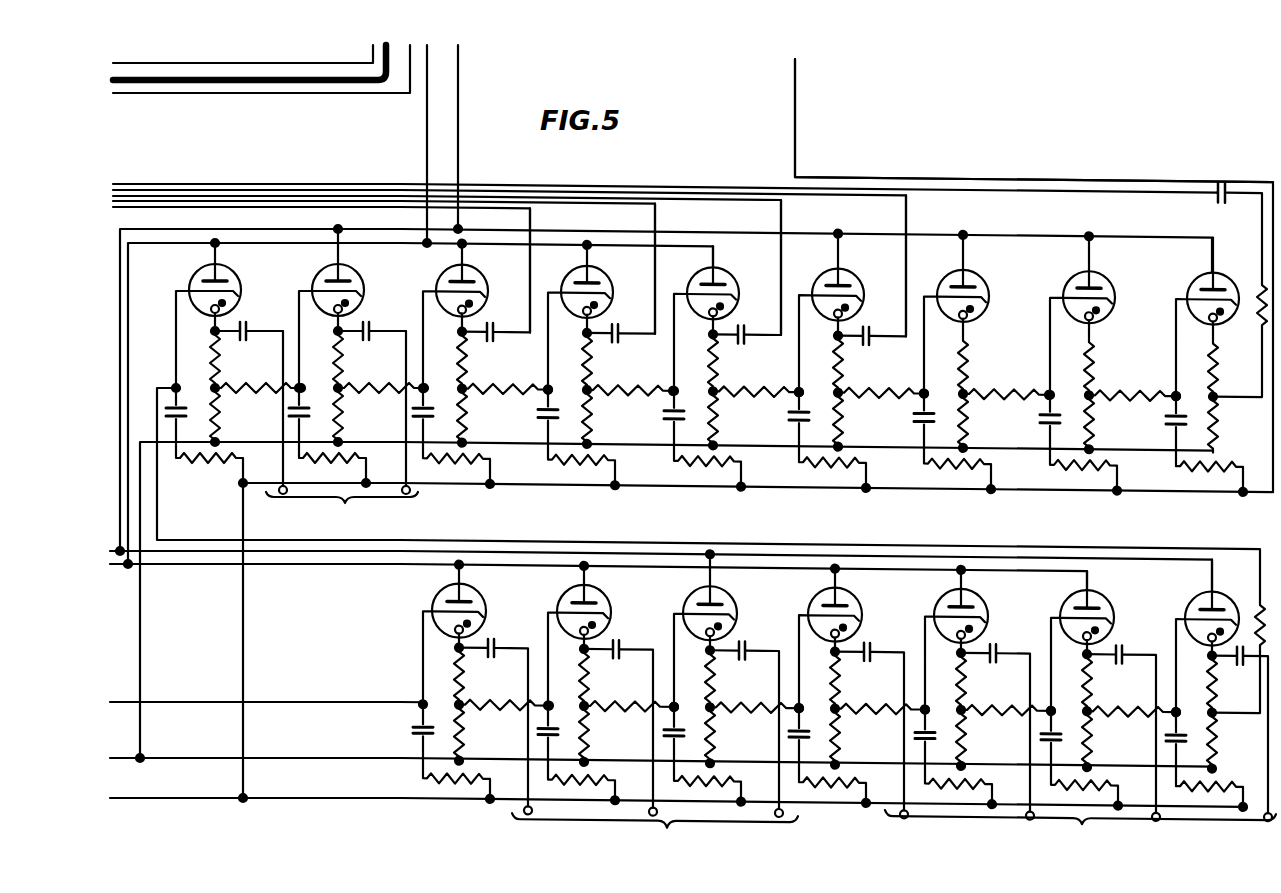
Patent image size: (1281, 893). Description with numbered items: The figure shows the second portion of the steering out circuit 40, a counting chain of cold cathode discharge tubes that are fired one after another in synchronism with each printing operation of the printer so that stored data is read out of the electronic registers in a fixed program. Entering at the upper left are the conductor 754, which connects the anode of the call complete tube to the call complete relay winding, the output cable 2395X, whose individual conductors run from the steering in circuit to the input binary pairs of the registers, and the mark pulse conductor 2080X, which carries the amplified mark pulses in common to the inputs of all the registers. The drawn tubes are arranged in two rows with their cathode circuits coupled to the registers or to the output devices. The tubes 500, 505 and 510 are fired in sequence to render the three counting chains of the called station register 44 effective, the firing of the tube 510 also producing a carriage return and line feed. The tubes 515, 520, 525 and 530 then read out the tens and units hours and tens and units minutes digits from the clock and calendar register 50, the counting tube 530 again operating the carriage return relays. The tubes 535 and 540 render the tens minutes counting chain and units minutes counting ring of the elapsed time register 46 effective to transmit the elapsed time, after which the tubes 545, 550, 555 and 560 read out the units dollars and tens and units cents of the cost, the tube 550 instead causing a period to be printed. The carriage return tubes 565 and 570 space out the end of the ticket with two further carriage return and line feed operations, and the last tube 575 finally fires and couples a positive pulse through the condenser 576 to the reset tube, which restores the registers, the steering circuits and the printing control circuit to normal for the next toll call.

The steering out circuit 40 is at (1240, 104).
The called station register 44 is at (655, 829).
The elapsed time register 46 is at (342, 513).
The clock and calendar register 50 is at (1080, 826).
The cold cathode discharge tube 500 is at (483, 687).
The cold cathode discharge tube 505 is at (608, 688).
The cold cathode discharge tube 510 is at (733, 683).
The cold cathode discharge tube 515 is at (859, 691).
The cold cathode discharge tube 520 is at (985, 692).
The cold cathode discharge tube 525 is at (1110, 696).
The counting tube 530 is at (1207, 690).
The cold cathode discharge tube 535 is at (235, 366).
The cold cathode discharge tube 540 is at (358, 359).
The cold cathode discharge tube 545 is at (482, 347).
The cold cathode discharge tube 550 is at (607, 345).
The cold cathode discharge tube 555 is at (733, 345).
The cold cathode discharge tube 560 is at (858, 343).
The carriage return tube 565 is at (983, 361).
The carriage return tube 570 is at (1110, 363).
The last tube 575 is at (1212, 364).
The condenser 576 is at (1215, 192).
The conductor 754 is at (272, 63).
The output cable 2395X is at (348, 84).
The mark pulse conductor 2080X is at (375, 96).